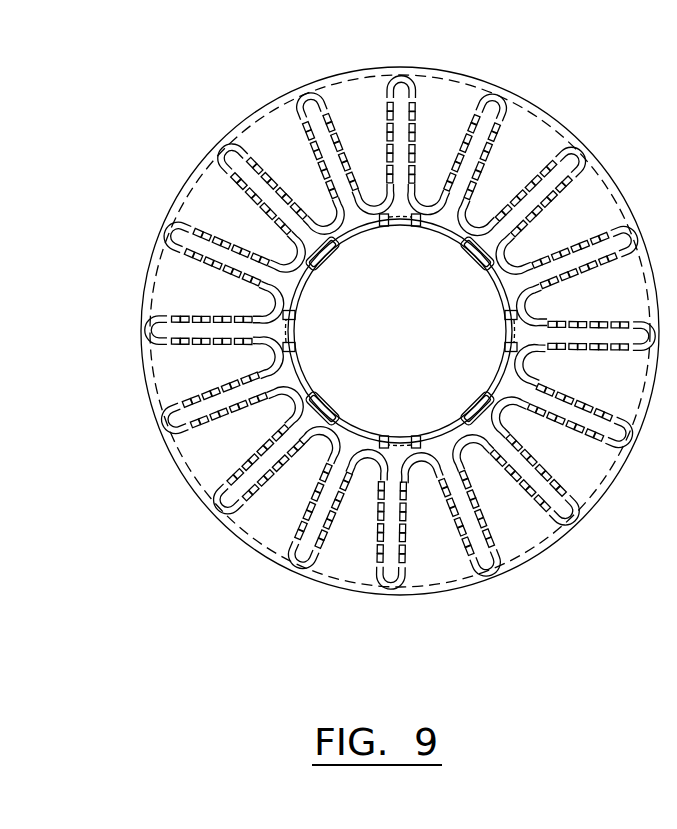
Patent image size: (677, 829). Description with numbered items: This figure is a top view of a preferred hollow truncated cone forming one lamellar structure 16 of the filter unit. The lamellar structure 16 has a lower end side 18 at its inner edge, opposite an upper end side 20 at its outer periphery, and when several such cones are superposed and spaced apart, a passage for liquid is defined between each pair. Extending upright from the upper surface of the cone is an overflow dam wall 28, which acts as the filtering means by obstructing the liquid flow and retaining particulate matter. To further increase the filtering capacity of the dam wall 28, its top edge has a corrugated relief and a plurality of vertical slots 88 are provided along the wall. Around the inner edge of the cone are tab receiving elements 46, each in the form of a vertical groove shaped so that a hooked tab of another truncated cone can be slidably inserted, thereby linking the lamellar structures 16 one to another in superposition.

The lamellar structure 16 is at (214, 85).
The lower end side 18 is at (541, 98).
The overflow dam wall 28 is at (611, 221).
The vertical slots 88 is at (206, 430).
The tab receiving element 46 is at (392, 240).
The upper end side 20 is at (460, 270).